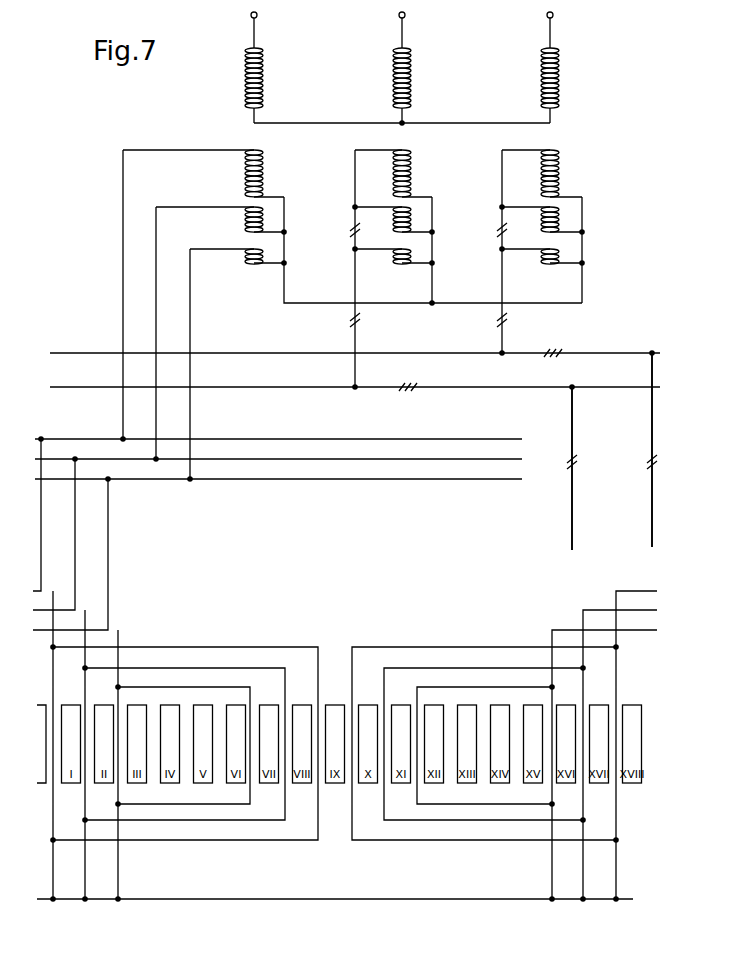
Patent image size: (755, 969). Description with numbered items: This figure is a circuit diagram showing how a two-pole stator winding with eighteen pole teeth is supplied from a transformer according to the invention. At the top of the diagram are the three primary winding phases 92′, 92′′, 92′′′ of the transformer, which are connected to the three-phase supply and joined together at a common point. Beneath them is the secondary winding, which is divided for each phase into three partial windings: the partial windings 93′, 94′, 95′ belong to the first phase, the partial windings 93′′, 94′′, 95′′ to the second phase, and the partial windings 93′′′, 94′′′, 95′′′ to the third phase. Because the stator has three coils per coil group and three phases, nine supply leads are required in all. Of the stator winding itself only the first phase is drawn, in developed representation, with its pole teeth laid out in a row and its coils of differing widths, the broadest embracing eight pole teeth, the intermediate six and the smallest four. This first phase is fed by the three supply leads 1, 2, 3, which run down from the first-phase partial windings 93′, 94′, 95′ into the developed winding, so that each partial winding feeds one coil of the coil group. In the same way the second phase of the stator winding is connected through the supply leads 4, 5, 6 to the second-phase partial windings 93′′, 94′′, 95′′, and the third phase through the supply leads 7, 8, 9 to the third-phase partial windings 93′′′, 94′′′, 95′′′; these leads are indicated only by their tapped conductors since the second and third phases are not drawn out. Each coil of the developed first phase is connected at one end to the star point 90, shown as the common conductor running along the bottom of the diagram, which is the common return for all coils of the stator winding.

The primary winding phase 92′ is at (303, 63).
The primary winding phase 92′′ is at (453, 63).
The primary winding phase 92′′′ is at (611, 63).
The partial winding 93′ is at (306, 148).
The partial winding 93′′ is at (456, 148).
The partial winding 93′′′ is at (613, 148).
The partial winding 94′ is at (318, 201).
The partial winding 94′′ is at (478, 201).
The partial winding 94′′′ is at (633, 201).
The partial winding 95′ is at (250, 265).
The partial winding 95′′ is at (405, 270).
The partial winding 95′′′ is at (558, 270).
The supply lead 1 is at (45, 513).
The supply lead 2 is at (62, 533).
The supply lead 3 is at (78, 553).
The supply lead 4 is at (546, 468).
The supply lead 5 is at (544, 468).
The supply lead 6 is at (544, 468).
The supply lead 7 is at (629, 450).
The supply lead 8 is at (628, 450).
The supply lead 9 is at (628, 450).
The star point 90 is at (335, 900).